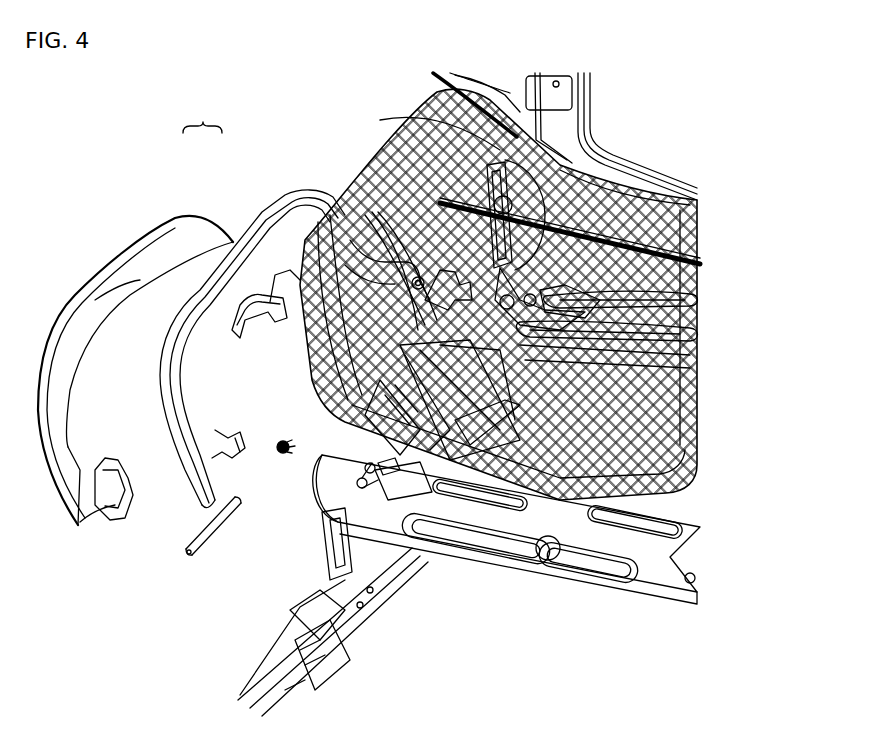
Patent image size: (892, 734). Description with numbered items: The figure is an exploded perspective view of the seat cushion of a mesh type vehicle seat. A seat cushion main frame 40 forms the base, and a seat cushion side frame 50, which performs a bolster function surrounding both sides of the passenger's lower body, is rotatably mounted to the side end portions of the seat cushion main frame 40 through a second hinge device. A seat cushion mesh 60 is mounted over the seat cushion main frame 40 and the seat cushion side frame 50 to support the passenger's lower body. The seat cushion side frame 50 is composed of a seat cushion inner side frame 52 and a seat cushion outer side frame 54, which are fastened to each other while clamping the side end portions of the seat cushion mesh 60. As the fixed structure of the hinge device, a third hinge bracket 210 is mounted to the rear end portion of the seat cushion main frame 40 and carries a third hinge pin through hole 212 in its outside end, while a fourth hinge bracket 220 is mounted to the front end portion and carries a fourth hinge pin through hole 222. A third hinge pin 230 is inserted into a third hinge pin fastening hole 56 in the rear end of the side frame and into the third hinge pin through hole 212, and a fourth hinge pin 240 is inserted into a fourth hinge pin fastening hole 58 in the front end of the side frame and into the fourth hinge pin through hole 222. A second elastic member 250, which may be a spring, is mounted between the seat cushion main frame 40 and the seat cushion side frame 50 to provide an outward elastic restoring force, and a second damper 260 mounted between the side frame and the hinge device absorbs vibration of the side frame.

The seat cushion main frame 40 is at (470, 560).
The seat cushion side frame 50 is at (202, 117).
The seat cushion inner side frame 52 is at (277, 213).
The seat cushion outer side frame 54 is at (175, 232).
The third hinge pin fastening hole 56 is at (347, 280).
The fourth hinge pin fastening hole 58 is at (118, 513).
The seat cushion mesh 60 is at (405, 150).
The third hinge bracket 210 is at (677, 330).
The third hinge pin through hole 212 is at (677, 313).
The fourth hinge bracket 220 is at (338, 525).
The fourth hinge pin through hole 222 is at (385, 493).
The third hinge pin 230 is at (345, 360).
The fourth hinge pin 240 is at (207, 522).
The second elastic member 250 is at (278, 444).
The second damper 260 is at (372, 210).